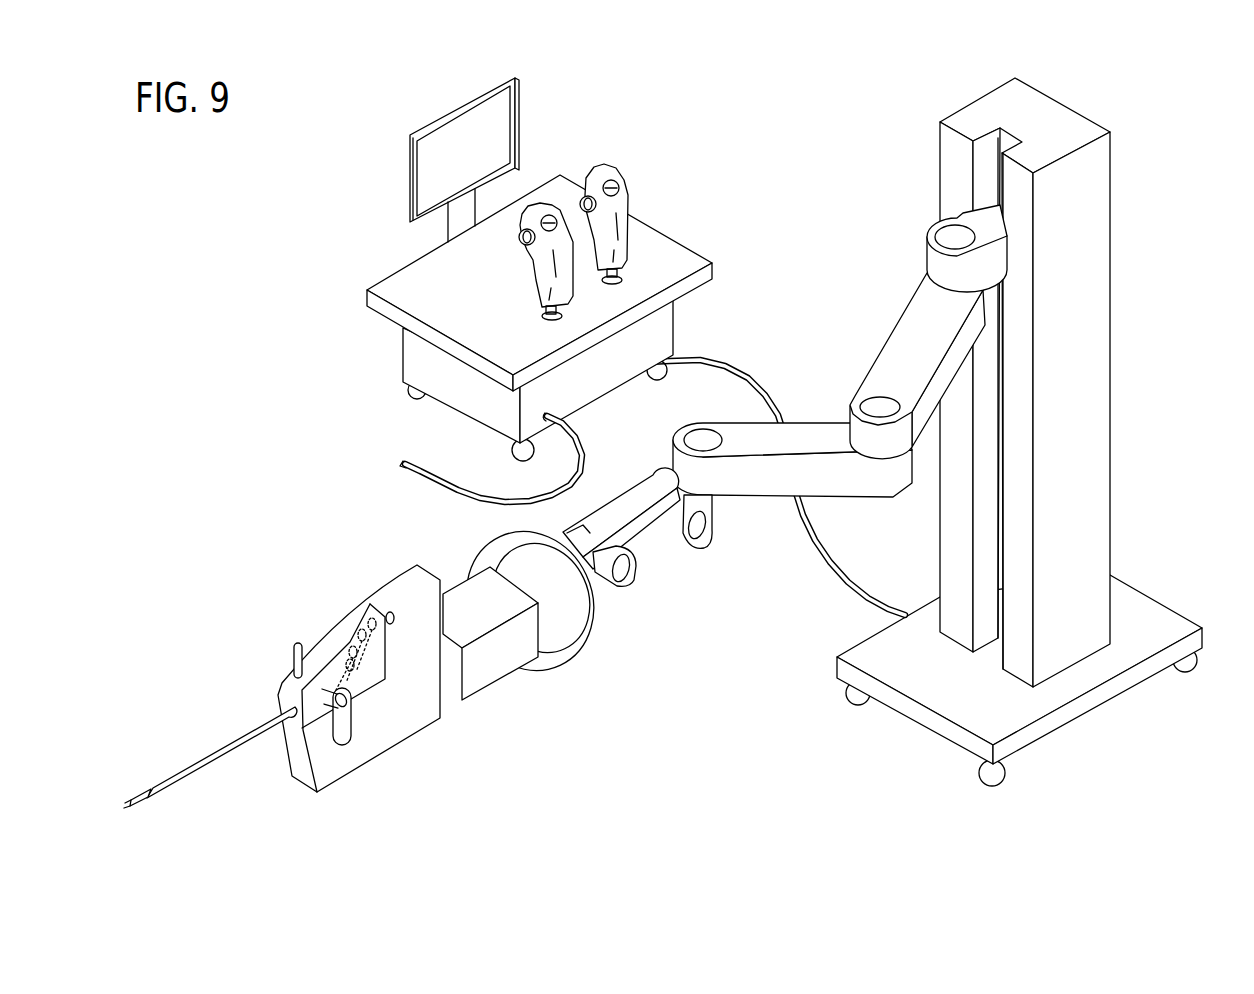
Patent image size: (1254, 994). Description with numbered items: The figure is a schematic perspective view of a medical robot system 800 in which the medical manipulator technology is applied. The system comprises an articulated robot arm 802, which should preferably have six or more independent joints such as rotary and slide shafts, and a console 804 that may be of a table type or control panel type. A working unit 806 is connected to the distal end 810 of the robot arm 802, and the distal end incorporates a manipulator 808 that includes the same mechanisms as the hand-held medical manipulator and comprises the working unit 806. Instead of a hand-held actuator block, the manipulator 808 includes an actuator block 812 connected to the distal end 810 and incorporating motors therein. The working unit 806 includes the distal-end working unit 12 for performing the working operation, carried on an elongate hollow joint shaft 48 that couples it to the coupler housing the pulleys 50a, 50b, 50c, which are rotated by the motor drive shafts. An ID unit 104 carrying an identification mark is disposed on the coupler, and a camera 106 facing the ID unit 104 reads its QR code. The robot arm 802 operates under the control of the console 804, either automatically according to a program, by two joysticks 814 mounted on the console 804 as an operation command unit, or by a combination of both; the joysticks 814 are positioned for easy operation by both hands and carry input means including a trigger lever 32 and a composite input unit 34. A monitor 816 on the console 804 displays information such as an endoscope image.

The medical robot system 800 is at (1238, 167).
The articulated robot arm 802 is at (1124, 243).
The console 804 is at (418, 357).
The working unit 806 is at (366, 659).
The manipulator 808 is at (365, 675).
The distal end of the robot arm 810 is at (493, 660).
The actuator block 812 is at (292, 745).
The joysticks 814 is at (623, 237).
The monitor 816 is at (467, 127).
The trigger lever 32 is at (522, 229).
The composite input unit 34 is at (536, 210).
The joint shaft 48 is at (207, 753).
The distal-end working unit 12 is at (137, 798).
The ID unit 104 is at (366, 666).
The camera 106 is at (389, 611).
The pulley 50a is at (369, 618).
The pulley 50b is at (359, 629).
The pulley 50c is at (350, 647).